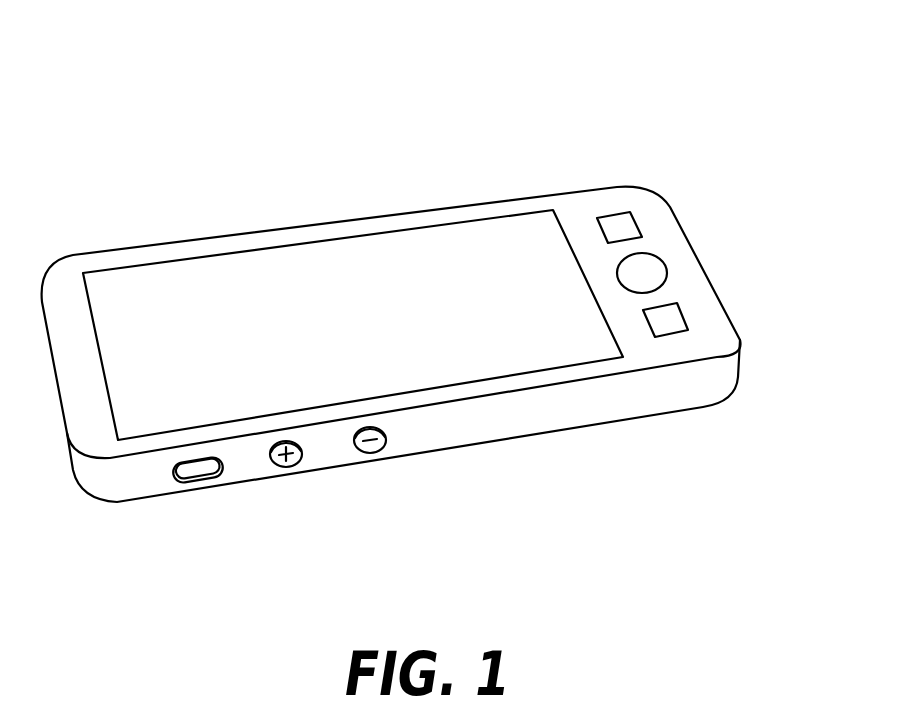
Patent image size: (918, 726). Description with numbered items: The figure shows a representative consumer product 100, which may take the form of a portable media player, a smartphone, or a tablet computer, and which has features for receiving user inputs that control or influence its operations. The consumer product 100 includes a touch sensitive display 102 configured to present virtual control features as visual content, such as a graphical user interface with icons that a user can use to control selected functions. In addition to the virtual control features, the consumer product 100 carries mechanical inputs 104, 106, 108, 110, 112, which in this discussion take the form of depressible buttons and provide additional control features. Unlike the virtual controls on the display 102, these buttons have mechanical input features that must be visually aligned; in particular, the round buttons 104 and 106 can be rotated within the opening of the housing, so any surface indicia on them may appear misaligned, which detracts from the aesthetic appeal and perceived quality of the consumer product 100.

The consumer product 100 is at (524, 112).
The touch sensitive display 102 is at (210, 267).
The mechanical input 104 is at (290, 467).
The mechanical input 106 is at (375, 452).
The mechanical input 108 is at (657, 275).
The mechanical input 110 is at (627, 222).
The mechanical input 112 is at (675, 324).